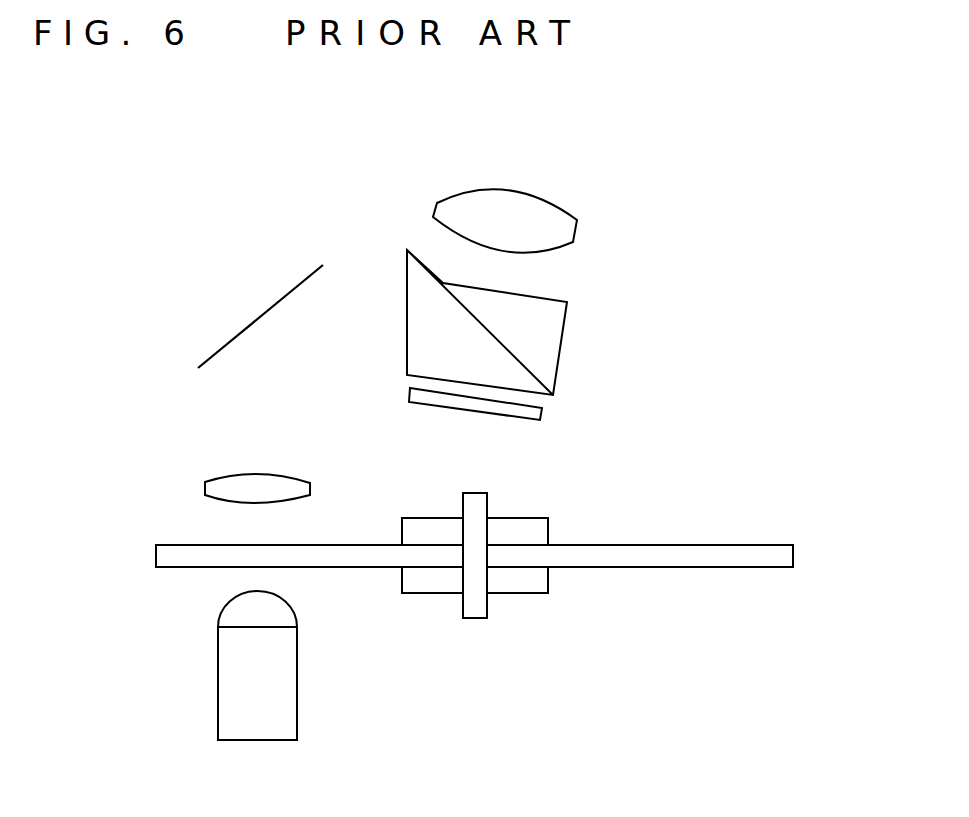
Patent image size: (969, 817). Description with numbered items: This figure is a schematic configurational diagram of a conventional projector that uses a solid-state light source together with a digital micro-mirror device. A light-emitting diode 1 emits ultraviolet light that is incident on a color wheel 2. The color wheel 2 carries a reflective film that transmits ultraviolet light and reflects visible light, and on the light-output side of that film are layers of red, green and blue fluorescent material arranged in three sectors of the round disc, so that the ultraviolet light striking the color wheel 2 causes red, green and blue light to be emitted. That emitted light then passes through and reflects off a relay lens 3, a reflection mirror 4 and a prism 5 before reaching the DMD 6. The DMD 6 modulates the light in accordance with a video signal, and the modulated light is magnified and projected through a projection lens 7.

The light-emitting diode 1 is at (297, 692).
The color wheel 2 is at (759, 572).
The relay lens 3 is at (205, 483).
The reflection mirror 4 is at (233, 329).
The prism 5 is at (557, 344).
The DMD 6 is at (542, 420).
The projection lens 7 is at (584, 213).